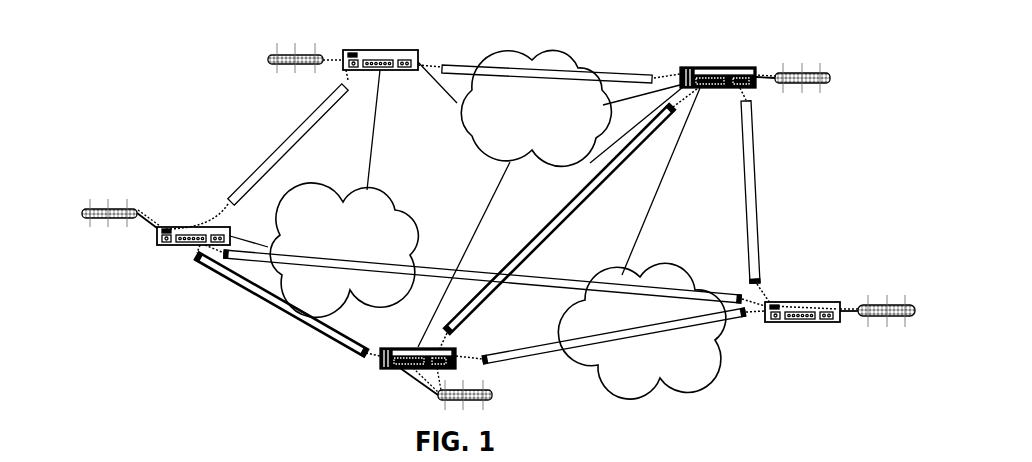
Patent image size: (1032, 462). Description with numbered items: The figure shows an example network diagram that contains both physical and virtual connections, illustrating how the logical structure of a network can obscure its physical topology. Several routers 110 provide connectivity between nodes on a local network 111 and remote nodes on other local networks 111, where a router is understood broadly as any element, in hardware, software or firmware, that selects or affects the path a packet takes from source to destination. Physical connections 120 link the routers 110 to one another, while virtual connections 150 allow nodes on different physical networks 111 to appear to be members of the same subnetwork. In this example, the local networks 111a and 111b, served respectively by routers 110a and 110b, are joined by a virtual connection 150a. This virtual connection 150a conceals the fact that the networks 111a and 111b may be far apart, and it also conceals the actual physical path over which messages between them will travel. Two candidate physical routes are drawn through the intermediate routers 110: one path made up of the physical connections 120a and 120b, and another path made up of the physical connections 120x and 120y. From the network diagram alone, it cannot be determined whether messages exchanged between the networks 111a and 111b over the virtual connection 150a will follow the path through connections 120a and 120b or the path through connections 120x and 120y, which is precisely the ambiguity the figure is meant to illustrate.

The router 110 is at (380, 47).
The router 110a is at (400, 370).
The router 110b is at (718, 72).
The local network 111 is at (268, 55).
The local network 111a is at (495, 397).
The local network 111b is at (832, 78).
The physical connection 120 is at (371, 130).
The physical connection 120a is at (664, 188).
The physical connection 120b is at (488, 347).
The physical connection 120x is at (590, 163).
The physical connection 120y is at (463, 253).
The virtual connection 150 is at (280, 140).
The virtual connection 150a is at (563, 224).